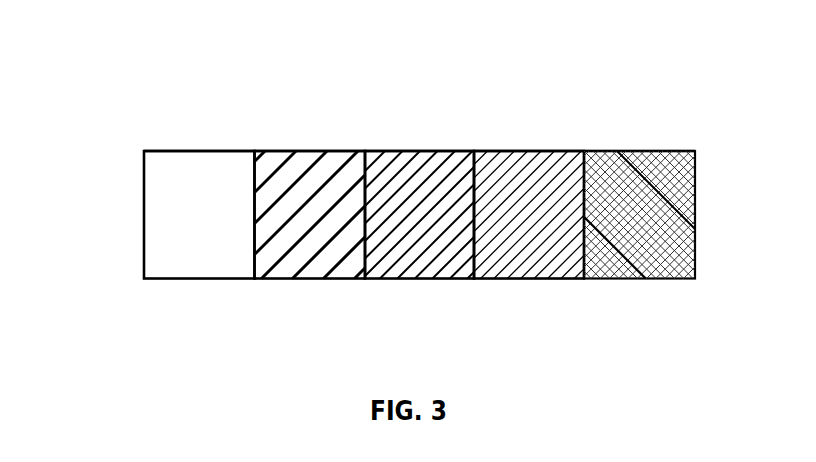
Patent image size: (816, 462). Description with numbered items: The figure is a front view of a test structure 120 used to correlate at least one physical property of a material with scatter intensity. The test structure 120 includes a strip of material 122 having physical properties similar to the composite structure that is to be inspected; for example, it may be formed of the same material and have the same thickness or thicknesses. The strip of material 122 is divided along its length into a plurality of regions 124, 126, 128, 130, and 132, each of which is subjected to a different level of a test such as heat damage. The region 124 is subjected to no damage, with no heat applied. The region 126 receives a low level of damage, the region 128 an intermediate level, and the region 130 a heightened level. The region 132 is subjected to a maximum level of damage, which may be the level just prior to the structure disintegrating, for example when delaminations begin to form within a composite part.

The test structure 120 is at (144, 121).
The strip of material 122 is at (229, 150).
The region 124 is at (168, 280).
The region 126 is at (283, 280).
The region 128 is at (390, 280).
The region 130 is at (500, 280).
The region 132 is at (615, 280).